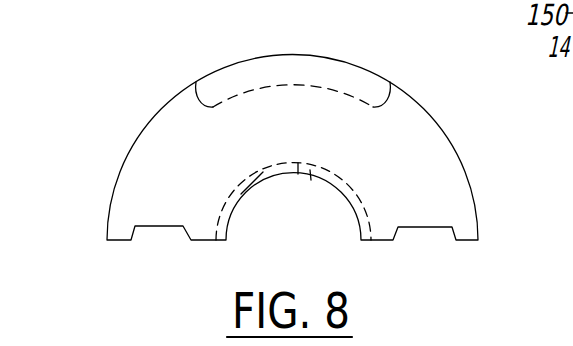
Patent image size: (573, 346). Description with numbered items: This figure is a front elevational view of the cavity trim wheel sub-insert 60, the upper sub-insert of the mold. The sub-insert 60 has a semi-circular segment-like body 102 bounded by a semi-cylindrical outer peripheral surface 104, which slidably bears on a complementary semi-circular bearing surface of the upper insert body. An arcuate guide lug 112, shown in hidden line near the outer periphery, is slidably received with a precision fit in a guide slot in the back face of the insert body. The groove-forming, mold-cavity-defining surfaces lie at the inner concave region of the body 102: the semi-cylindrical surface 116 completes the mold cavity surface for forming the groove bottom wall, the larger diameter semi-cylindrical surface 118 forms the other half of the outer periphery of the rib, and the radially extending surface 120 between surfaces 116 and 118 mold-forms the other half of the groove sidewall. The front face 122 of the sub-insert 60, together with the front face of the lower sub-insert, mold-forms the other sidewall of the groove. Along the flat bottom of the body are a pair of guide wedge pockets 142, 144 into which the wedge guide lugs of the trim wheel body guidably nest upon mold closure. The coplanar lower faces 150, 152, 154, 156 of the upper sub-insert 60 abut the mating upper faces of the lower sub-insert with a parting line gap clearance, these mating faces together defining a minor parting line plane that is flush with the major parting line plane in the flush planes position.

The sub-insert 60 is at (150, 103).
The semi-circular segment-like body 102 is at (423, 140).
The semi-cylindrical outer peripheral surface 104 is at (408, 93).
The arcuate guide lug 112 is at (305, 67).
The semi-cylindrical surface 116 is at (229, 218).
The larger diameter semi-cylindrical surface 118 is at (265, 172).
The radially extending surface 120 is at (303, 190).
The front face 122 is at (428, 188).
The guide wedge pocket 142 is at (163, 228).
The guide wedge pocket 144 is at (424, 228).
The lower face 150 is at (117, 241).
The lower face 152 is at (203, 242).
The lower face 154 is at (378, 243).
The lower face 156 is at (483, 240).